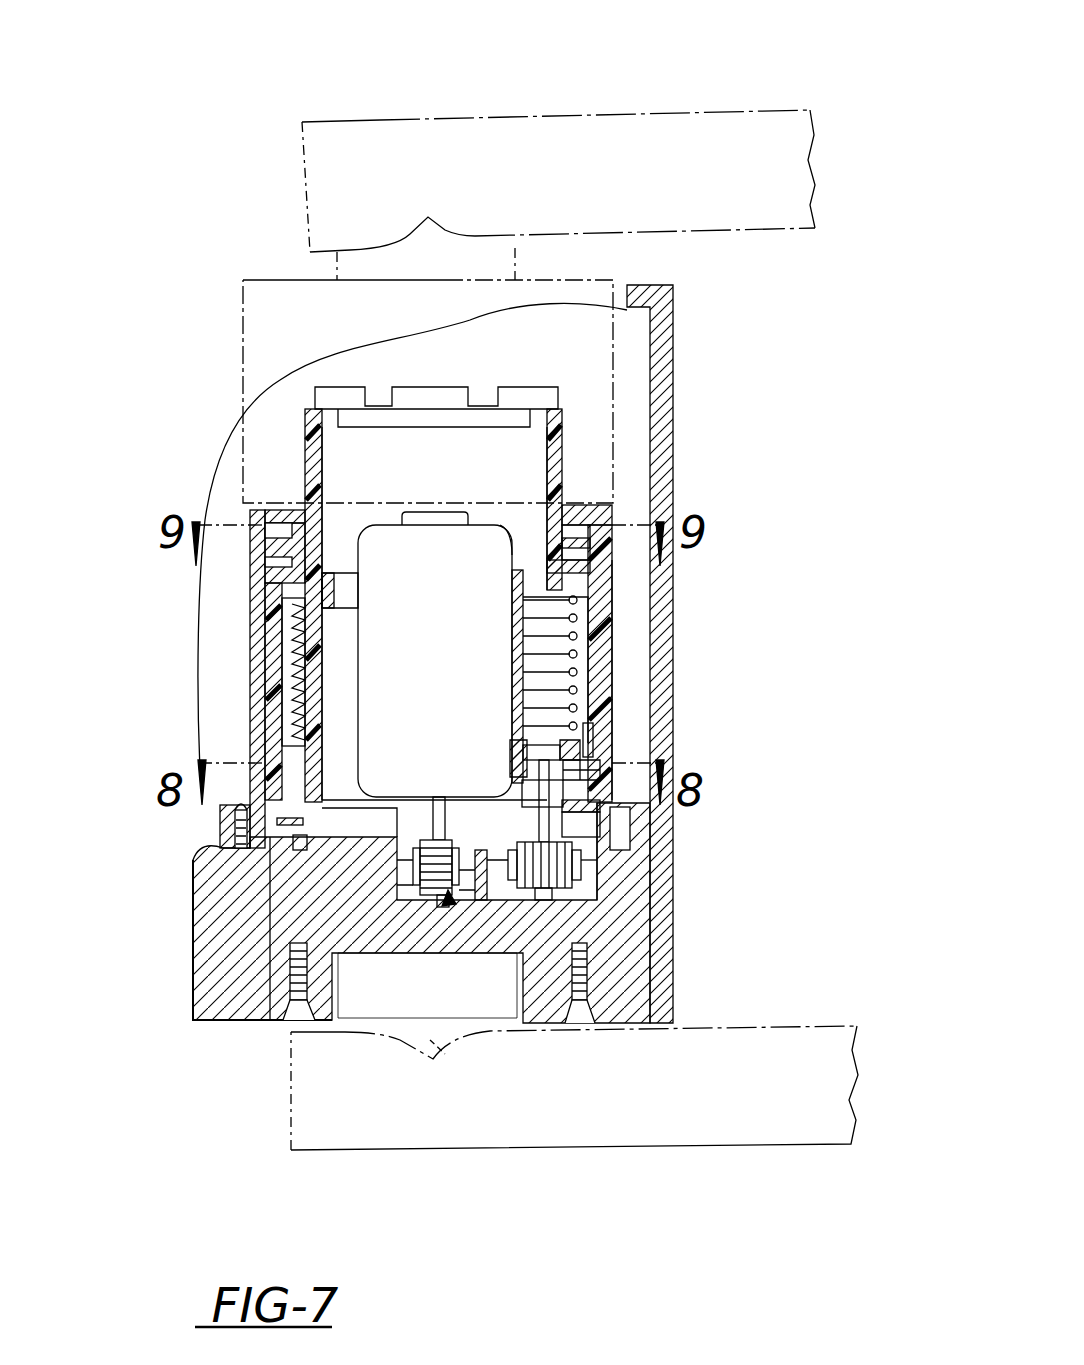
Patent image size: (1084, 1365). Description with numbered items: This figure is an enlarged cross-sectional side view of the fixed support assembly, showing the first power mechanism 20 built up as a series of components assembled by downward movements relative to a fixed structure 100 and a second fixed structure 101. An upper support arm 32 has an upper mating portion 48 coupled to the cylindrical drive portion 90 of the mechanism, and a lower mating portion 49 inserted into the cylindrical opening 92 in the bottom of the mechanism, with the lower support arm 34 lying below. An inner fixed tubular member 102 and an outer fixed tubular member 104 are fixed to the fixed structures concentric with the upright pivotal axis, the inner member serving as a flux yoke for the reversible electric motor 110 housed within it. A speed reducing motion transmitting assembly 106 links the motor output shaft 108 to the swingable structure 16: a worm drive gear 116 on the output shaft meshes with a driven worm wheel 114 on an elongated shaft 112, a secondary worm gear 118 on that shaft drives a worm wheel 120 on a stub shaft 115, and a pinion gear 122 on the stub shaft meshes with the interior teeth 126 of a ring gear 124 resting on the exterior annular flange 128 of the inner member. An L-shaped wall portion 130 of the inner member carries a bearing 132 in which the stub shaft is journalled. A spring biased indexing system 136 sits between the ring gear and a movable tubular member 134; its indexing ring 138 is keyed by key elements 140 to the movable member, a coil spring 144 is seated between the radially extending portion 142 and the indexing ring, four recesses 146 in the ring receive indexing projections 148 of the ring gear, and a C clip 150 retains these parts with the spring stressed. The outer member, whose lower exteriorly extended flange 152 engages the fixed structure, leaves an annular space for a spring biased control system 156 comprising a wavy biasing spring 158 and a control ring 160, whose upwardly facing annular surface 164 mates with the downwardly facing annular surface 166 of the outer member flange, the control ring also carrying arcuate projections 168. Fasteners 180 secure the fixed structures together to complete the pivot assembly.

The swingable structure 16 is at (832, 104).
The upper support arm 32 is at (615, 122).
The lower support arm 34 is at (638, 1147).
The upper mating portion 48 is at (245, 330).
The lower mating portion 49 is at (440, 1062).
The cylindrical drive portion 90 is at (462, 387).
The cylindrical opening 92 is at (342, 1024).
The fixed structure 100 is at (222, 1028).
The fixed structure 101 is at (285, 907).
The inner fixed tubular member 102 is at (255, 692).
The outer fixed tubular member 104 is at (265, 578).
The speed reducing motion transmitting assembly 106 is at (470, 912).
The output shaft 108 is at (433, 820).
The reversible electric motor 110 is at (410, 688).
The elongated shaft 112 is at (486, 908).
The driven gear 114 is at (432, 902).
The stub shaft 115 is at (518, 792).
The drive gear 116 is at (447, 908).
The secondary drive gear 118 is at (578, 902).
The worm wheel 120 is at (598, 962).
The pinion gear 122 is at (523, 752).
The ring gear 124 is at (583, 866).
The teeth 126 is at (592, 847).
The exterior annular flange 128 is at (540, 832).
The L-shaped wall portion 130 is at (512, 600).
The bearing 132 is at (592, 802).
The movable tubular member 134 is at (612, 697).
The spring biased indexing system 136 is at (285, 722).
The indexing ring 138 is at (612, 767).
The key elements 140 is at (598, 742).
The radially extending portion 142 is at (612, 600).
The coil spring 144 is at (292, 622).
The recesses 146 is at (282, 762).
The indexing projections 148 is at (232, 850).
The C clip 150 is at (578, 880).
The exteriorly extended flange 152 is at (233, 812).
The spring biased control system 156 is at (245, 547).
The biasing spring 158 is at (612, 548).
The control ring 160 is at (612, 545).
The annular surface 164 is at (322, 535).
The annular surface 166 is at (512, 530).
The arcuate projections 168 is at (583, 508).
The fasteners 180 is at (290, 1032).
The first power mechanism 20 is at (665, 660).